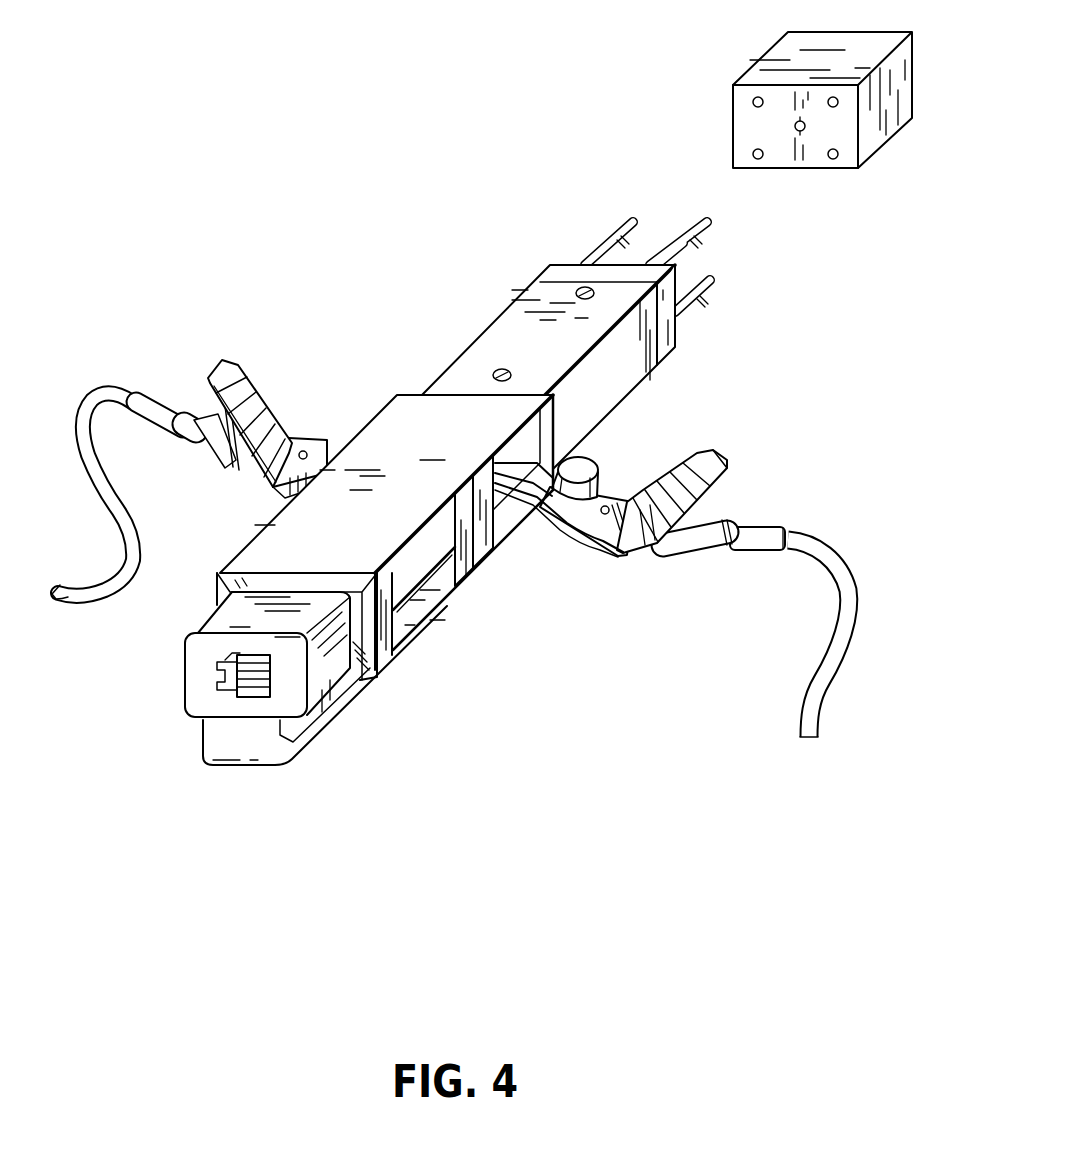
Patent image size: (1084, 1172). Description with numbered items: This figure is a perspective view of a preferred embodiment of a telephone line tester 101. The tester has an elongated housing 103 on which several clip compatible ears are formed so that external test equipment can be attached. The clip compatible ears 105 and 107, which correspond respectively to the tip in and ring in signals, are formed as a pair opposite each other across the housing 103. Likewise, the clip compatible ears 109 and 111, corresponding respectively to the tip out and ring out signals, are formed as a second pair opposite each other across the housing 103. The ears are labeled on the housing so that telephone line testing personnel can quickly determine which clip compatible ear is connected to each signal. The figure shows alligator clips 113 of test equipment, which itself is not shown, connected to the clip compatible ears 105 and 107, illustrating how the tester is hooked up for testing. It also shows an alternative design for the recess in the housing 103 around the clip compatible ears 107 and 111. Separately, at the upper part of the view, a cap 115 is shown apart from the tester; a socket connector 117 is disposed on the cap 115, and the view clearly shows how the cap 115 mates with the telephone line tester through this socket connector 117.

The telephone line tester 101 is at (475, 277).
The housing 103 is at (628, 403).
The clip compatible ear 105 is at (372, 418).
The clip compatible ear 107 is at (507, 530).
The clip compatible ear 109 is at (253, 533).
The clip compatible ear 111 is at (415, 578).
The alligator clips 113 is at (297, 437).
The cap 115 is at (753, 63).
The socket connector 117 is at (783, 152).